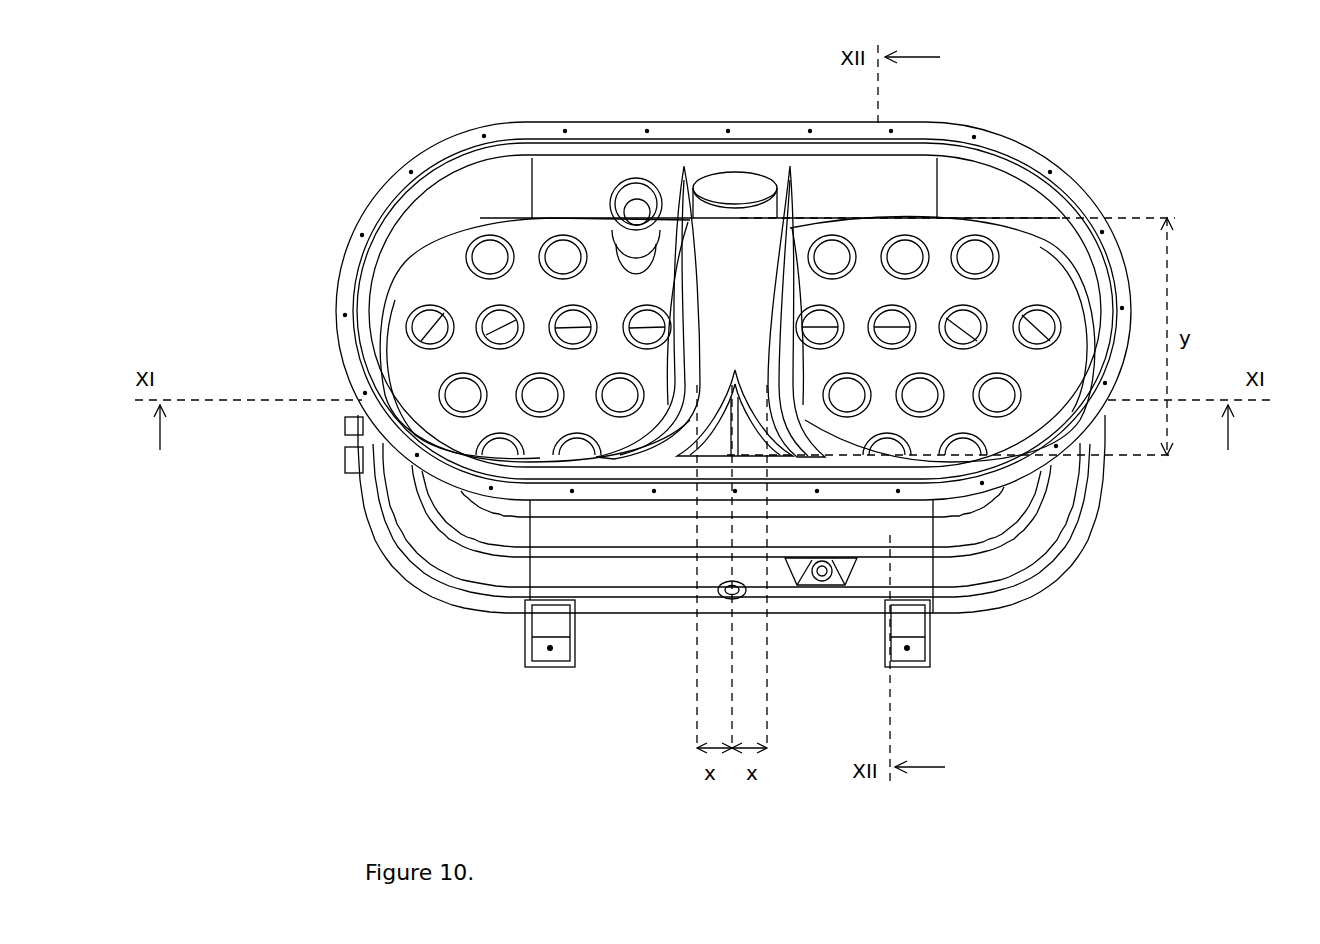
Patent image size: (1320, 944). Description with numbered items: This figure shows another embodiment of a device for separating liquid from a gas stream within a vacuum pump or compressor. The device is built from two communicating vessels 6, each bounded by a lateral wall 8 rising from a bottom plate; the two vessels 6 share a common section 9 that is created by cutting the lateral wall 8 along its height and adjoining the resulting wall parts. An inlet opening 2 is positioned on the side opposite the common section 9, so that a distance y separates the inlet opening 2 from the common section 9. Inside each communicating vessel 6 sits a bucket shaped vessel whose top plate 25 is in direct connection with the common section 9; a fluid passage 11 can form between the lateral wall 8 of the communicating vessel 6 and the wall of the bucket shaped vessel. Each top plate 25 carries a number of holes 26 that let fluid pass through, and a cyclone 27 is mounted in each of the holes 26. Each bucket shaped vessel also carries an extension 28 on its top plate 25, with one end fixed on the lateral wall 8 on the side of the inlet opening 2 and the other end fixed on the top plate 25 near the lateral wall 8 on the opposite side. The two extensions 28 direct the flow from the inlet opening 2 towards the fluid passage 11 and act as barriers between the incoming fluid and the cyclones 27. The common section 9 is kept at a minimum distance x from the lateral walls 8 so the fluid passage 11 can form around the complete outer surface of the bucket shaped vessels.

The inlet opening 2 is at (742, 190).
The communicating vessel 6 is at (418, 493).
The lateral wall 8 is at (432, 218).
The common section 9 is at (730, 374).
The fluid passage 11 is at (548, 466).
The top plate 25 is at (452, 268).
The hole 26 is at (430, 327).
The cyclone 27 is at (610, 195).
The extension 28 is at (698, 224).